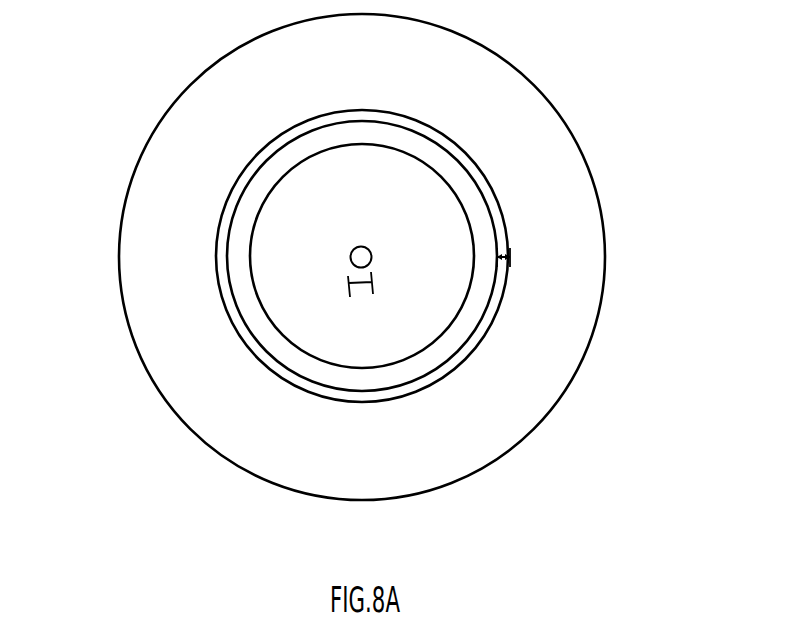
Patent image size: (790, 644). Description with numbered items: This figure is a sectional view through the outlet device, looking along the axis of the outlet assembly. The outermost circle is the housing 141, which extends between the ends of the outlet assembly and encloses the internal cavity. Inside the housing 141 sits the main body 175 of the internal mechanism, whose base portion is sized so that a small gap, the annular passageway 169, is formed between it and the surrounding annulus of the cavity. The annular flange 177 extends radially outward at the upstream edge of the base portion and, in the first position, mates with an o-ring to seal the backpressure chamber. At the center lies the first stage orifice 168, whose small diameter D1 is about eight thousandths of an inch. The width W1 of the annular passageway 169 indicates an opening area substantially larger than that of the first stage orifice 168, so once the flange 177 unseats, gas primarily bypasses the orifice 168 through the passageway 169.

The housing 141 is at (500, 388).
The annular passageway 169 is at (231, 186).
The main body 175 is at (245, 237).
The annular flange 177 is at (238, 309).
The first stage orifice 168 is at (372, 243).
The diameter of the first stage orifice D1 is at (360, 284).
The width of the annulus W1 is at (505, 270).